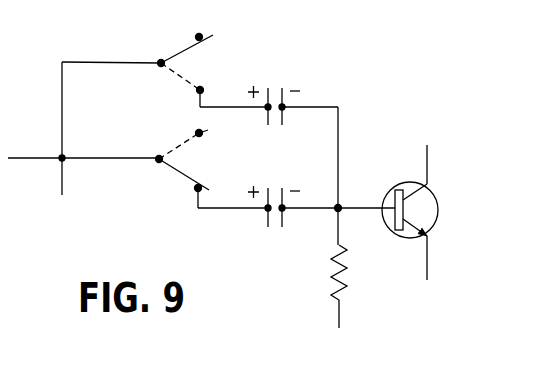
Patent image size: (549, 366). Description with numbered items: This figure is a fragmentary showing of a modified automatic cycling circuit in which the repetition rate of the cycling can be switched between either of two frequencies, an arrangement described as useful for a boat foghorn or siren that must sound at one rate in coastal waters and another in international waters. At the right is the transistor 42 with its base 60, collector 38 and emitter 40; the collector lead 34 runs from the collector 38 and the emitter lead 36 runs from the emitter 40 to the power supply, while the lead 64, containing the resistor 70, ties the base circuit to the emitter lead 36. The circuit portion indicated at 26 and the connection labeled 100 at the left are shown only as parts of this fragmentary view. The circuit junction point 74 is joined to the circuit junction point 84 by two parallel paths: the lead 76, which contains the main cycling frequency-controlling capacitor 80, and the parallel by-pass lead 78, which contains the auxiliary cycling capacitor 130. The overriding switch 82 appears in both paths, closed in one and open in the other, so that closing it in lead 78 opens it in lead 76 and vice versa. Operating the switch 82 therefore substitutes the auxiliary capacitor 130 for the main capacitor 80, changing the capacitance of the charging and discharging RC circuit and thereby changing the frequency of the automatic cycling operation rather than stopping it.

The input line 100 is at (25, 162).
The circuit junction point 84 is at (59, 156).
The overriding switch 82 is at (185, 165).
The auxiliary cycling capacitor 130 is at (284, 85).
The cycling frequency-controlling capacitor 80 is at (286, 184).
The lead 76 is at (215, 210).
The parallel lead 78 is at (339, 121).
The circuit 26 is at (351, 89).
The circuit junction point 74 is at (339, 208).
The lead 64 is at (336, 224).
The resistor 70 is at (333, 266).
The transistor 42 is at (389, 233).
The base 60 is at (399, 238).
The collector 38 is at (416, 196).
The emitter 40 is at (429, 226).
The collector lead 34 is at (427, 156).
The emitter lead 36 is at (428, 262).